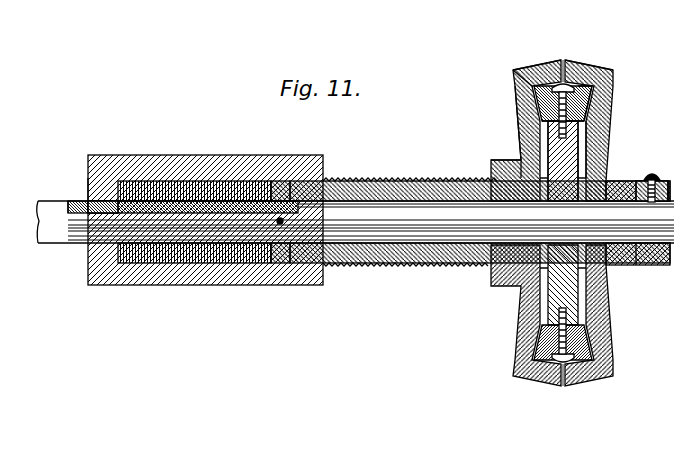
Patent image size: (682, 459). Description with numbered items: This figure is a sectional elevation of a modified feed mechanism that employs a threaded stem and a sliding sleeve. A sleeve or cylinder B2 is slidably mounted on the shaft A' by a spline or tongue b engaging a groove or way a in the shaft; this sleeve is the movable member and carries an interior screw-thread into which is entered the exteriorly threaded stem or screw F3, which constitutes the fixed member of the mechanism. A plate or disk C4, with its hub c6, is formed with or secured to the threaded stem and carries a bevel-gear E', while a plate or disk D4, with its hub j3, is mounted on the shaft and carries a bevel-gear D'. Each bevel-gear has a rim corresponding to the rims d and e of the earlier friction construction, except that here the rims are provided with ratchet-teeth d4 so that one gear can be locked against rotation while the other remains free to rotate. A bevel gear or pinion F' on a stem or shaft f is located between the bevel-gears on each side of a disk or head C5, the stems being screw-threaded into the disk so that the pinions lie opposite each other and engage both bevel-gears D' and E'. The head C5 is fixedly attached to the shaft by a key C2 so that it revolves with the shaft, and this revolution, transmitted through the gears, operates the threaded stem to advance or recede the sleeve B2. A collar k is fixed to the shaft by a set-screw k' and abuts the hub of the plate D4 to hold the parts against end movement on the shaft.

The groove or way a is at (63, 194).
The spline or tongue b is at (80, 186).
The sleeve or cylinder B2 is at (196, 143).
The threaded sleeve F3 is at (363, 190).
The spindle A' is at (355, 253).
The rim e is at (521, 64).
The ratchet-teeth d4 is at (545, 57).
The rim d is at (596, 58).
The stem or shaft f is at (590, 81).
The collar F' is at (493, 107).
The bevel-gear E' is at (495, 129).
The plate or disk C4 is at (513, 108).
The shoulder c6 is at (486, 153).
The disk or head C5 is at (575, 152).
The bevel-gear D' is at (584, 110).
The plate or disk D4 is at (594, 134).
The key j3 is at (607, 174).
The set-screw k' is at (654, 175).
The set screw k is at (671, 165).
The key C2 is at (603, 258).